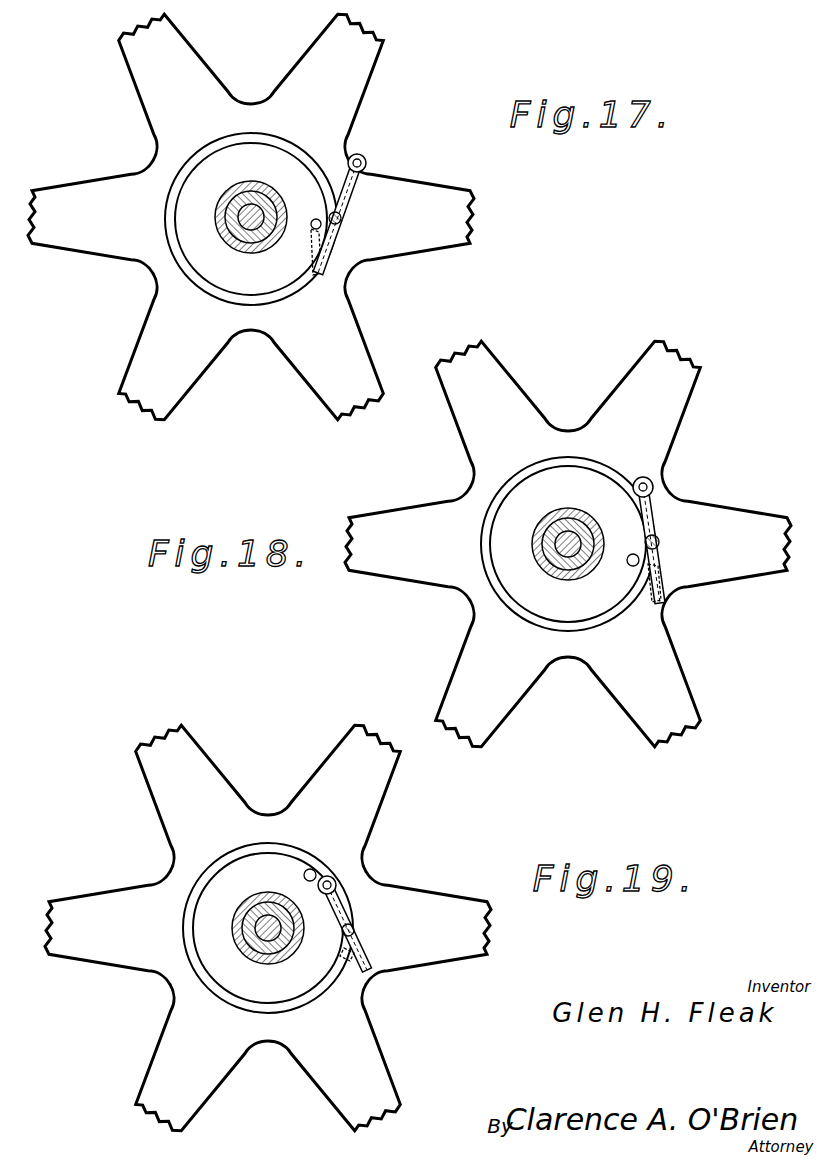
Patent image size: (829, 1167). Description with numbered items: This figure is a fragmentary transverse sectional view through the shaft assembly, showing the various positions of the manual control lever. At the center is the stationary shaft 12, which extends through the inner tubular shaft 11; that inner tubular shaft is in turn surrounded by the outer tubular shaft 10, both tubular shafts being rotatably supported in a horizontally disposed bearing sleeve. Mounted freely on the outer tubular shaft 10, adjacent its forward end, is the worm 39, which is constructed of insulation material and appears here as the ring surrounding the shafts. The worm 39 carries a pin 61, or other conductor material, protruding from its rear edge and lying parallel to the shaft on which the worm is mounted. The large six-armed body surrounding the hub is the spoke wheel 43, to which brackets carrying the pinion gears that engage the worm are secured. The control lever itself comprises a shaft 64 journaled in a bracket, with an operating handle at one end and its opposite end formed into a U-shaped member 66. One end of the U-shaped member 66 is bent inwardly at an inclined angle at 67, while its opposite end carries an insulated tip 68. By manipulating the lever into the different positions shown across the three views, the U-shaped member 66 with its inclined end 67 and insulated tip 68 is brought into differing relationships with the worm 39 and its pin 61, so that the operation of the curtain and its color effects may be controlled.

In FIG. 17, the outer tubular shaft 10 is at (251, 199).
In FIG. 18, the outer tubular shaft 10 is at (568, 532).
In FIG. 19, the outer tubular shaft 10 is at (256, 918).
In FIG. 17, the inner tubular shaft 11 is at (251, 193).
In FIG. 18, the inner tubular shaft 11 is at (574, 524).
In FIG. 19, the inner tubular shaft 11 is at (244, 926).
In FIG. 17, the stationary shaft 12 is at (262, 194).
In FIG. 18, the stationary shaft 12 is at (541, 544).
In FIG. 19, the stationary shaft 12 is at (239, 929).
In FIG. 17, the worm 39 is at (251, 206).
In FIG. 18, the worm 39 is at (568, 527).
In FIG. 19, the worm 39 is at (268, 911).
In FIG. 17, the spoke wheel 43 is at (251, 217).
In FIG. 18, the spoke wheel 43 is at (568, 544).
In FIG. 19, the spoke wheel 43 is at (268, 928).
In FIG. 17, the pin 61 is at (308, 210).
In FIG. 18, the pin 61 is at (625, 537).
In FIG. 19, the pin 61 is at (286, 873).
In FIG. 17, the shaft 64 is at (363, 222).
In FIG. 18, the shaft 64 is at (675, 533).
In FIG. 19, the shaft 64 is at (374, 922).
In FIG. 17, the U-shaped member 66 is at (357, 217).
In FIG. 18, the U-shaped member 66 is at (677, 538).
In FIG. 19, the U-shaped member 66 is at (362, 911).
In FIG. 17, the inwardly bent end 67 is at (294, 252).
In FIG. 18, the inwardly bent end 67 is at (626, 583).
In FIG. 19, the inwardly bent end 67 is at (320, 961).
In FIG. 17, the insulated tip 68 is at (381, 159).
In FIG. 18, the insulated tip 68 is at (673, 467).
In FIG. 19, the insulated tip 68 is at (331, 860).